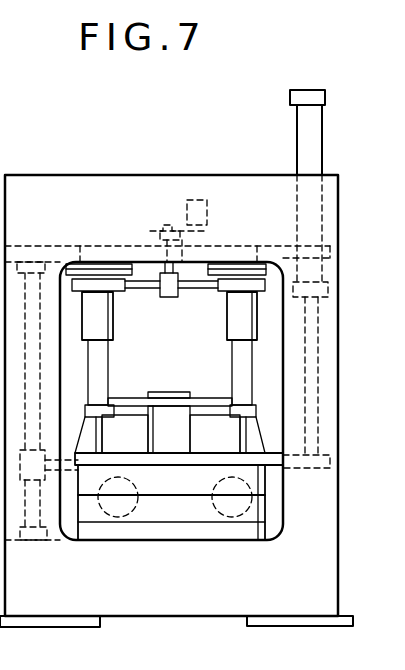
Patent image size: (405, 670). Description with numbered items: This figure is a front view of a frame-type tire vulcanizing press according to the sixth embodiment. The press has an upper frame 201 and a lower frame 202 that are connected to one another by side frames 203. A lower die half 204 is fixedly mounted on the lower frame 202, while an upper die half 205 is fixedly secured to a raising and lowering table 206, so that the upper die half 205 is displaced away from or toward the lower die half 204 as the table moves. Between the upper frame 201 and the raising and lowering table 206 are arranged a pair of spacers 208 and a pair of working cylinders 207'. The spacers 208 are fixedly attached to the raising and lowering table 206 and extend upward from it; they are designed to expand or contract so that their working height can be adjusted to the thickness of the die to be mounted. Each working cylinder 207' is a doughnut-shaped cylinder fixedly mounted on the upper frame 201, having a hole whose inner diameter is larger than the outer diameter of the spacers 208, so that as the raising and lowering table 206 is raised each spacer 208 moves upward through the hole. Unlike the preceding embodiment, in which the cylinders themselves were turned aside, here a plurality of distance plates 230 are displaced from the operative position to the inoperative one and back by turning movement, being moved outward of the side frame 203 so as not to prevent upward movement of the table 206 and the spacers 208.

The upper frame 201 is at (52, 178).
The lower frame 202 is at (184, 618).
The side frame 203 is at (338, 333).
The lower die half 204 is at (265, 510).
The upper die half 205 is at (265, 483).
The raising and lowering table 206 is at (258, 435).
The working cylinder 207' is at (168, 239).
The spacer 208 is at (108, 368).
The distance plate 230 is at (122, 292).